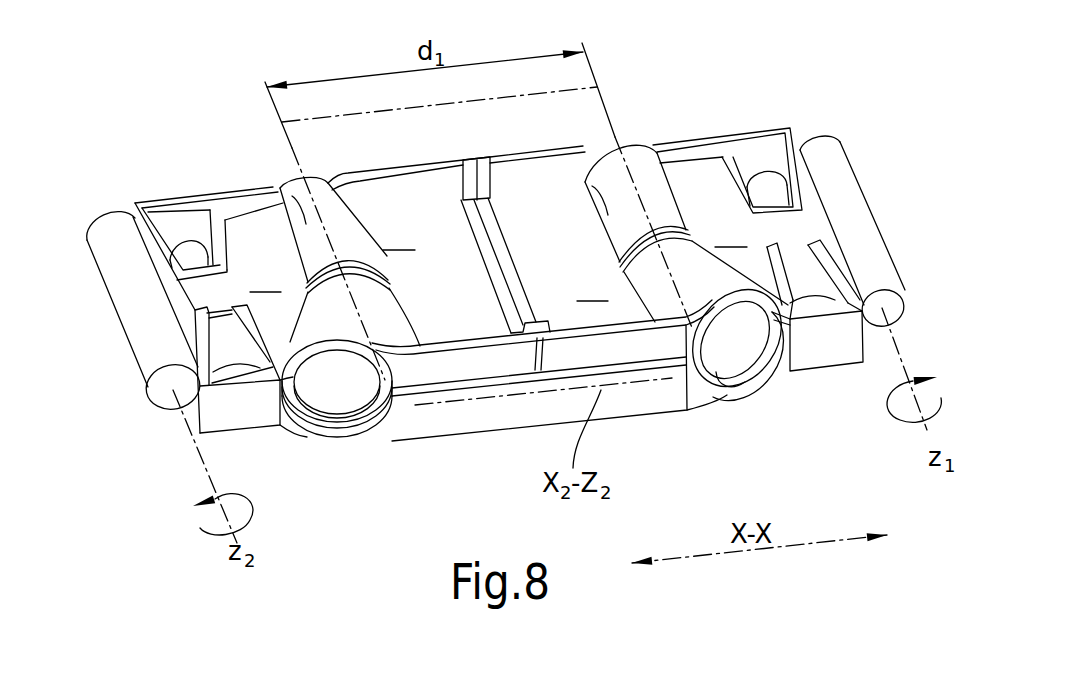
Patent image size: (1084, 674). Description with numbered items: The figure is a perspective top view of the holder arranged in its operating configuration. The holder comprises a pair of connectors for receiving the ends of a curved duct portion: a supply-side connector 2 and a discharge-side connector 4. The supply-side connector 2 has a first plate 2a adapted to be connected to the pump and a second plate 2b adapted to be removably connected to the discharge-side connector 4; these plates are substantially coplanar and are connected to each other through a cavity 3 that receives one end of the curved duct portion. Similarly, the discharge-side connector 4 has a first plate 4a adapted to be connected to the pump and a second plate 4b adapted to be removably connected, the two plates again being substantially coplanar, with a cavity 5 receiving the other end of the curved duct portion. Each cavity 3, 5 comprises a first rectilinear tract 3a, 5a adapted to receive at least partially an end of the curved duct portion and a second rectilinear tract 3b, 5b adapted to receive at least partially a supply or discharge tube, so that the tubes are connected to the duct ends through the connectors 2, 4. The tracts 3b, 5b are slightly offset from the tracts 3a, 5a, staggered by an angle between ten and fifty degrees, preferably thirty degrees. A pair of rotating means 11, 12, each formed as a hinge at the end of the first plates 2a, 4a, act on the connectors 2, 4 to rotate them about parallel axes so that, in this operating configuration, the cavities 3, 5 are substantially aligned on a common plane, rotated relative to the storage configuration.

The supply-side connector 2 is at (783, 101).
The first plate 2a is at (789, 294).
The second plate 2b is at (549, 357).
The cavity 3 is at (729, 366).
The first rectilinear tract 3a is at (647, 185).
The second rectilinear tract 3b is at (760, 273).
The discharge-side connector 4 is at (169, 169).
The first plate 4a is at (251, 350).
The second plate 4b is at (456, 258).
The cavity 5 is at (313, 406).
The first rectilinear tract 5a is at (290, 200).
The second rectilinear tract 5b is at (375, 312).
The rotating means 11 is at (863, 258).
The rotating means 12 is at (140, 287).